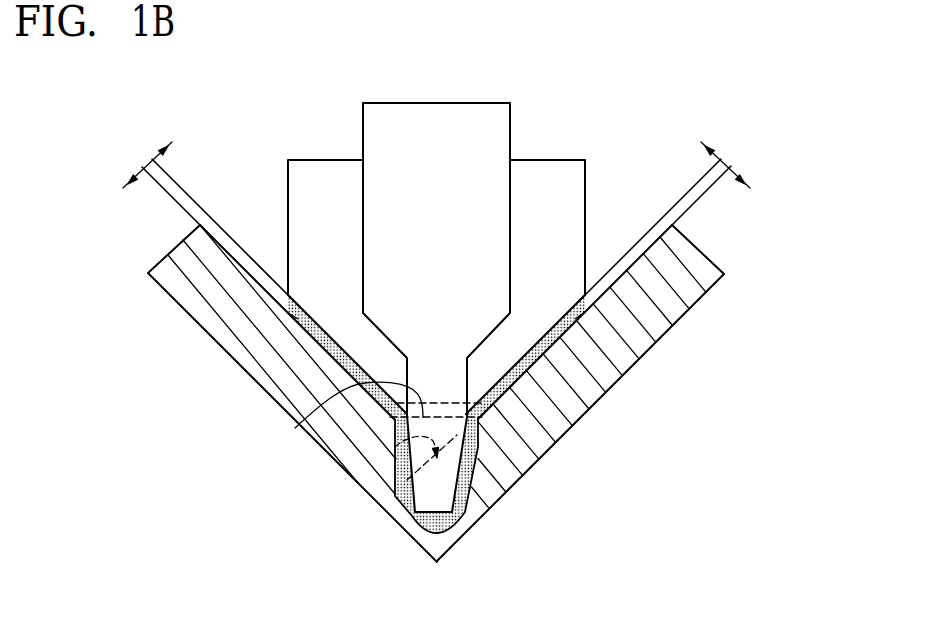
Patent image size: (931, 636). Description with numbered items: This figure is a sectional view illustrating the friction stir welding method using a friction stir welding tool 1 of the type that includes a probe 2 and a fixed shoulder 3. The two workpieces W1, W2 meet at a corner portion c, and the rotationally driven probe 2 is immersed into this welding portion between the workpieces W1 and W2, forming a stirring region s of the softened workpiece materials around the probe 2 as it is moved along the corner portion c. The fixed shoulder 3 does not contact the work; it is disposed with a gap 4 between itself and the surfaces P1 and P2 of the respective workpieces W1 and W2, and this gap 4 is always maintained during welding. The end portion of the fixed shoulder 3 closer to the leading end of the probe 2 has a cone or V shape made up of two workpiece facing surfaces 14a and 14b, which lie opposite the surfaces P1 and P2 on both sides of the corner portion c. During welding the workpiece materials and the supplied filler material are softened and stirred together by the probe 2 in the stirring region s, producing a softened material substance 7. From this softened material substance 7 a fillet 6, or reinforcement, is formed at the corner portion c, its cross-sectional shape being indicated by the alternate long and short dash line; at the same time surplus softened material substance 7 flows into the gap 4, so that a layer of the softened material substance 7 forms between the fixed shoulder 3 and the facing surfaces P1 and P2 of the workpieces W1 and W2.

The friction stir welding tool 1 is at (549, 128).
The probe 2 is at (418, 508).
The fixed shoulder 3 is at (586, 176).
The gap 4 is at (436, 157).
The fillet 6 is at (295, 428).
The softened material substance 7 is at (302, 324).
The workpiece facing surface 14a is at (284, 297).
The workpiece facing surface 14b is at (584, 297).
The surface of workpiece P1 is at (216, 228).
The surface of workpiece P2 is at (656, 238).
The workpiece W1 is at (151, 253).
The workpiece W2 is at (722, 257).
The corner portion c is at (395, 447).
The stirring region s is at (475, 480).